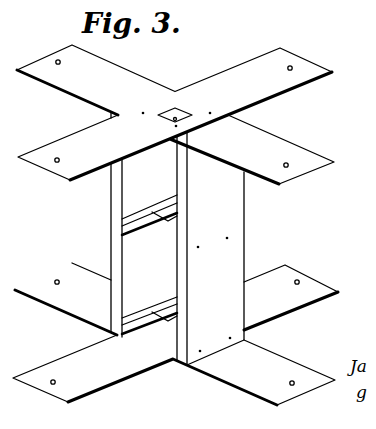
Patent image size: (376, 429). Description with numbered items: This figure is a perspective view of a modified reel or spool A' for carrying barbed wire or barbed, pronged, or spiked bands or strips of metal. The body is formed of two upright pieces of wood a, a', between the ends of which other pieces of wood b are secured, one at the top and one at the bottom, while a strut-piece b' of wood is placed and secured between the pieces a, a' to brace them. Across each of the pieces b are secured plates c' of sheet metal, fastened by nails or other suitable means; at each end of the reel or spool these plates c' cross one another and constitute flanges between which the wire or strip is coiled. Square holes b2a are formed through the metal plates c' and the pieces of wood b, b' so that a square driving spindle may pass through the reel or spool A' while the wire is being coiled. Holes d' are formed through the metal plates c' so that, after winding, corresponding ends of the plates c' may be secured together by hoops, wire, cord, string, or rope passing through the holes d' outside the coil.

The reel or spool A' is at (185, 227).
The piece of wood a is at (116, 224).
The piece of wood a' is at (193, 238).
The piece of wood b is at (149, 239).
The strut-piece b' is at (149, 215).
The hole b2a is at (170, 323).
The plate of sheet metal c' is at (175, 225).
The hole d' is at (187, 227).